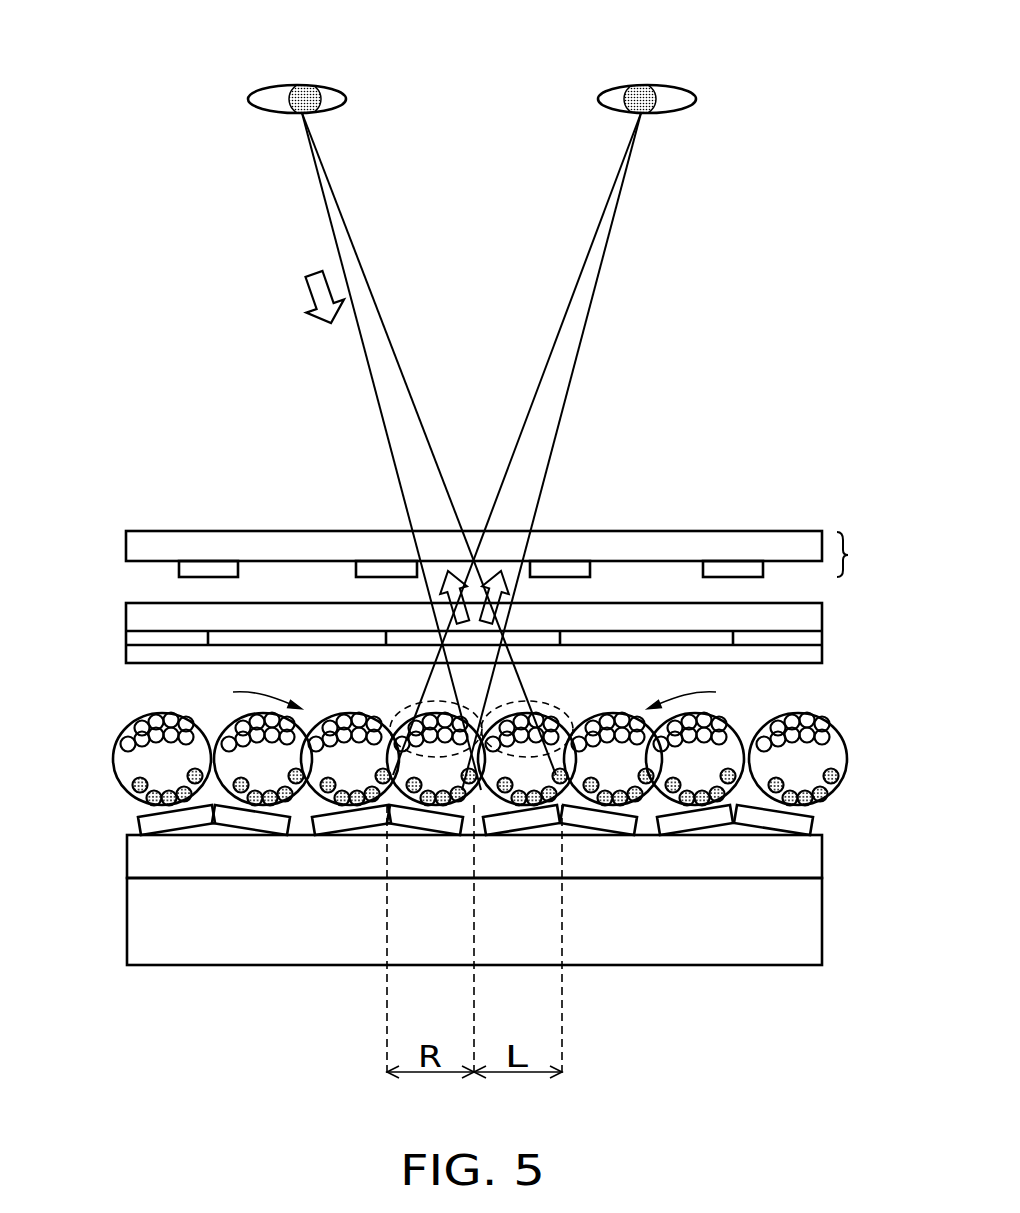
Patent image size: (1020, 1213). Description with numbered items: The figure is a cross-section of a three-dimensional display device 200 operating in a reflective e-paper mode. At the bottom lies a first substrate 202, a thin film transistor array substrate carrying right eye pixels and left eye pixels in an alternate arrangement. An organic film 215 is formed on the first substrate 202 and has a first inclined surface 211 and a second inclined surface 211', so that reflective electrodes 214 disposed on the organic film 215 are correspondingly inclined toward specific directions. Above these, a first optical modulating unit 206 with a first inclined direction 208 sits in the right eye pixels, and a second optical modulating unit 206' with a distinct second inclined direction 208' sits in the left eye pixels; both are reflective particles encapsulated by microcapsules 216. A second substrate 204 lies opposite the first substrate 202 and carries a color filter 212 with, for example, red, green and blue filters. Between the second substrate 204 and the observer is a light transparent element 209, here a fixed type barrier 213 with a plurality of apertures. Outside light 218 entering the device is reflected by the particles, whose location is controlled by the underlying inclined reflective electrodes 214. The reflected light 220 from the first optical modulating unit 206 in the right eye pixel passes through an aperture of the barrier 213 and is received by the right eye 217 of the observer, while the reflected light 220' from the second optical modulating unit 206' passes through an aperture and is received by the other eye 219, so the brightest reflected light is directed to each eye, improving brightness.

The 3D display device 200 is at (882, 1053).
The first substrate 202 is at (142, 927).
The second substrate 204 is at (128, 614).
The first optical modulating unit 206 is at (403, 714).
The second optical modulating unit 206' is at (554, 714).
The first inclined direction 208 is at (237, 690).
The second inclined direction 208' is at (712, 690).
The light transparent element 209 is at (514, 554).
The first inclined surface 211 is at (390, 913).
The second inclined surface 211' is at (560, 913).
The color filter 212 is at (128, 641).
The barrier 213 is at (733, 567).
The reflective electrodes 214 is at (423, 913).
The organic film 215 is at (145, 862).
The microcapsules 216 is at (114, 757).
The right eye 217 is at (697, 99).
The outside light 218 is at (307, 297).
The eye 219 is at (248, 99).
The reflected light 220 is at (540, 548).
The reflected light 220' is at (407, 548).